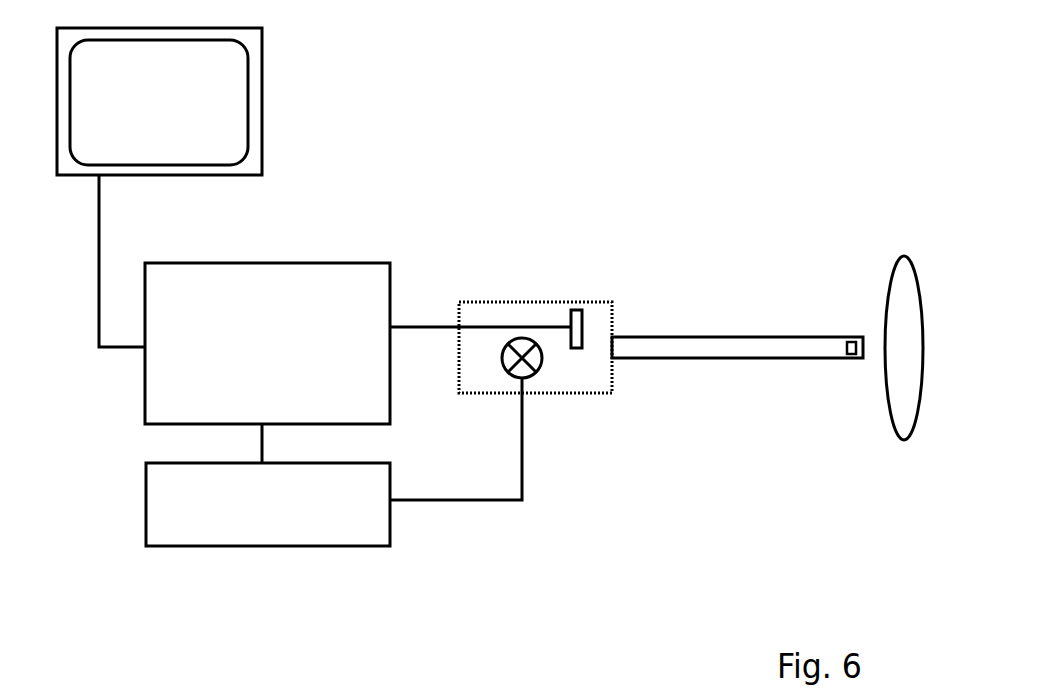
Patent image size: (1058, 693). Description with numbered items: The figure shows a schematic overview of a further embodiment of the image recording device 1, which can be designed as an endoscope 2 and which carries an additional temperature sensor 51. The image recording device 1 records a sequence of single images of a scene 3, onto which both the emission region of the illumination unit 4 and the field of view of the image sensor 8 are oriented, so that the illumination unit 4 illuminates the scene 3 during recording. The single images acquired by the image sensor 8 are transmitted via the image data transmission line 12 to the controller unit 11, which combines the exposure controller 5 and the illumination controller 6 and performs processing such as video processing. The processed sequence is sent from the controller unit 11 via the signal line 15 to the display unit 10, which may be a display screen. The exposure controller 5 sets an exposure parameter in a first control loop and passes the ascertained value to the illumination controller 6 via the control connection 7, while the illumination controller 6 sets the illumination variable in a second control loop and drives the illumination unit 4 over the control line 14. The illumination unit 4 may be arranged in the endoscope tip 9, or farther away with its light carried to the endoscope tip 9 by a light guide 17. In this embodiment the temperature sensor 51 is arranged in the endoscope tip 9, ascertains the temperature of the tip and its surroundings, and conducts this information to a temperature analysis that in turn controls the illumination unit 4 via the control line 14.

The image recording device 1 is at (836, 114).
The endoscope 2 is at (778, 153).
The scene 3 is at (903, 318).
The illumination unit 4 is at (560, 367).
The exposure controller 5 is at (267, 343).
The illumination controller 6 is at (268, 504).
The control connection 7 is at (262, 447).
The image sensor 8 is at (577, 310).
The endoscope tip 9 is at (861, 332).
The display unit 10 is at (159, 101).
The controller unit 11 is at (267, 343).
The image data transmission line 12 is at (480, 233).
The control line 14 is at (466, 453).
The signal line 15 is at (99, 237).
The light guide 17 is at (500, 502).
The temperature sensor 51 is at (851, 358).